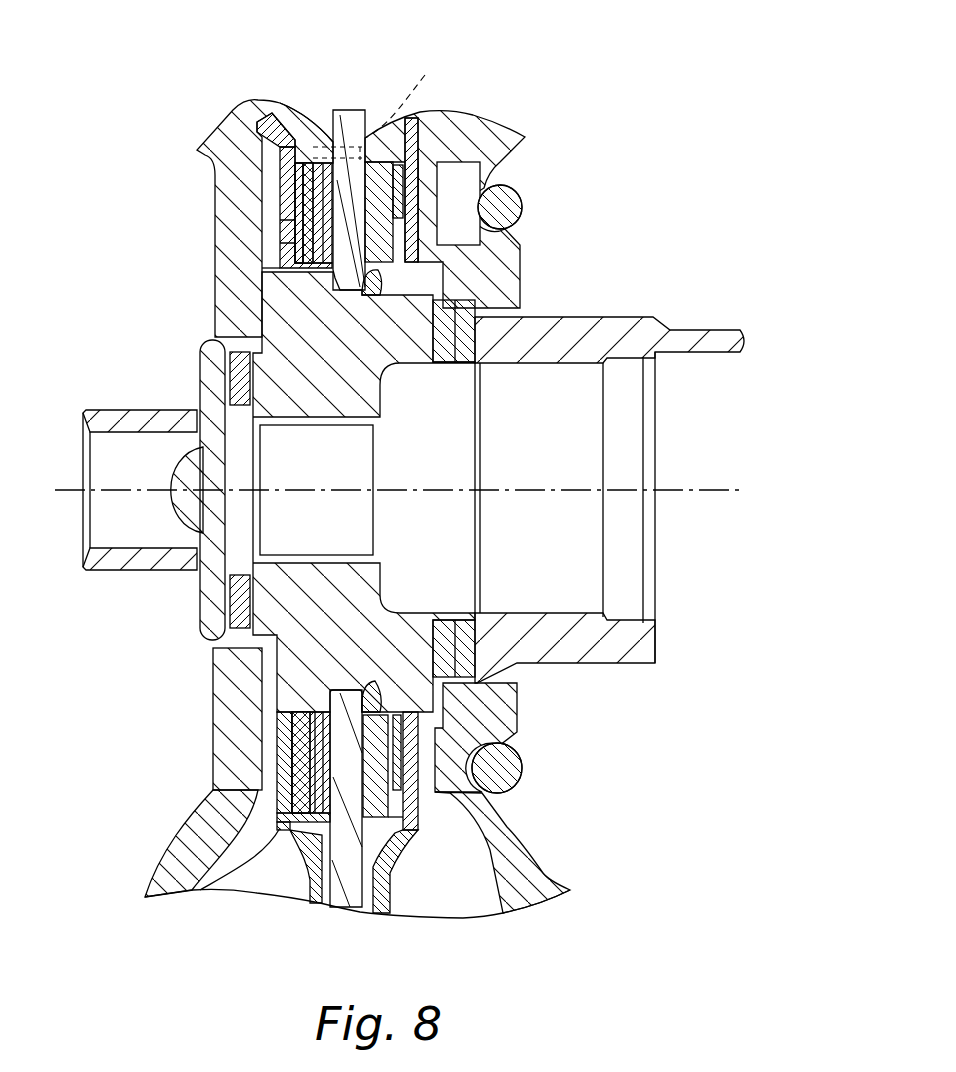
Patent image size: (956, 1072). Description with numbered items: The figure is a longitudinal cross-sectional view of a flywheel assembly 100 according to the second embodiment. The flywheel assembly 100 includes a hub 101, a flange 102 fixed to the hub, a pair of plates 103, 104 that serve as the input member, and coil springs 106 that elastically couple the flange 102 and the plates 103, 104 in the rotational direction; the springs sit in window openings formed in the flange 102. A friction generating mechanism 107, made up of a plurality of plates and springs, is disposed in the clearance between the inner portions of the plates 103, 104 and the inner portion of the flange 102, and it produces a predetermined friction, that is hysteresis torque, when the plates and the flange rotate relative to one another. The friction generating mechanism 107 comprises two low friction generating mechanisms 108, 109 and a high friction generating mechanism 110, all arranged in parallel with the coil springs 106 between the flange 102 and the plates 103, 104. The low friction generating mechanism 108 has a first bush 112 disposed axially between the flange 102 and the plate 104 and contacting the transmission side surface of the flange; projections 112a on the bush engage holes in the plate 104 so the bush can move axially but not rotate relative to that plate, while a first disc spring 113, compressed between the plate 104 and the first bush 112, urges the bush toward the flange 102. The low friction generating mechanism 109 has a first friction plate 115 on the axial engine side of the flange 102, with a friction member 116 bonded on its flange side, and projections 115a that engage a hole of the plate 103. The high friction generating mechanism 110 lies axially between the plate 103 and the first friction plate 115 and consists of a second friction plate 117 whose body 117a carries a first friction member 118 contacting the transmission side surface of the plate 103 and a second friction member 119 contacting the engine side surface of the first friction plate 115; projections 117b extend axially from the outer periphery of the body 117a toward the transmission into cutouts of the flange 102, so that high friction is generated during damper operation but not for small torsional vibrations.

The flywheel assembly 100 is at (569, 105).
The hub 101 is at (343, 382).
The flange 102 is at (347, 200).
The plate 103 is at (292, 228).
The plate 104 is at (427, 165).
The coil springs 106 is at (292, 103).
The friction generating mechanism 107 is at (233, 284).
The low friction generating mechanism 108 is at (380, 832).
The low friction generating mechanism 109 is at (310, 875).
The high friction generating mechanism 110 is at (318, 134).
The first bush 112 is at (373, 743).
The projections 112a is at (405, 235).
The first disc spring 113 is at (392, 760).
The first friction plate 115 is at (313, 738).
The projections 115a is at (321, 838).
The friction member 116 is at (327, 780).
The second friction plate 117 is at (315, 247).
The body 117a is at (300, 195).
The projections 117b is at (420, 92).
The first friction member 118 is at (297, 172).
The second friction member 119 is at (274, 266).